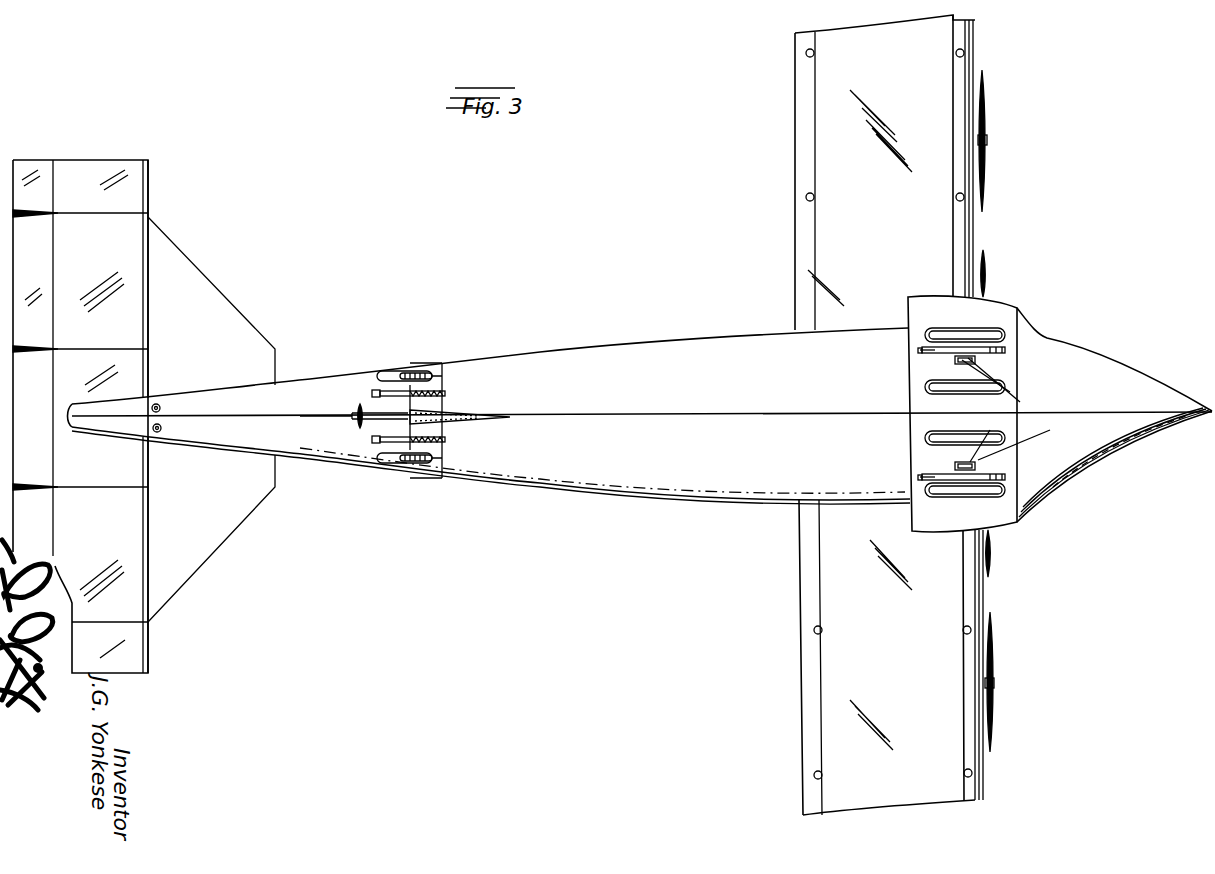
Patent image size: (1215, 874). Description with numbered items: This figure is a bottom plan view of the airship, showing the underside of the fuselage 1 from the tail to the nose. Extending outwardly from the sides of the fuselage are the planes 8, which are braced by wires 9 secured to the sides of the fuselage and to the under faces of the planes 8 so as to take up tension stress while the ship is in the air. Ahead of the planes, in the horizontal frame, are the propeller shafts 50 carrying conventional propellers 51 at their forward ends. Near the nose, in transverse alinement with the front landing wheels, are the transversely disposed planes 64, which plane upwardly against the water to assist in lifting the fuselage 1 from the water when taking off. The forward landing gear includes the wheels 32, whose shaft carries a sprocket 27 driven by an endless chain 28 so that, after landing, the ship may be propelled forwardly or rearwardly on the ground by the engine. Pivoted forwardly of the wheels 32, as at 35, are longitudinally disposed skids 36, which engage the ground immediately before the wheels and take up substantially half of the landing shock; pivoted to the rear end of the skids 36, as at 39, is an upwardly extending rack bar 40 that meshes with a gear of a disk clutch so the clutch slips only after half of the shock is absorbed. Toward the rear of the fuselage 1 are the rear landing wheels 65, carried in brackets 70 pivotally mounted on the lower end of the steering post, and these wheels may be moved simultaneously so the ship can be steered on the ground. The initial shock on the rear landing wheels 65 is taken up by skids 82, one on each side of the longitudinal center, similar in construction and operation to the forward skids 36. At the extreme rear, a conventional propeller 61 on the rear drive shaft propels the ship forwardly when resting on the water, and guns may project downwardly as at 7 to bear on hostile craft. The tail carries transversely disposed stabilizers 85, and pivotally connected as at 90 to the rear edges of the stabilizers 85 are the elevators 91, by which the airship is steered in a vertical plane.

The fuselage 1 is at (640, 416).
The down-firing gun projection 7 is at (160, 428).
The planes 8 is at (885, 415).
The wires 9 is at (818, 227).
The sprocket 27 is at (1021, 403).
The endless chain 28 is at (1012, 393).
The wheels 32 is at (925, 335).
The pivot of skids 35 is at (1005, 349).
The skids 36 is at (975, 360).
The pivot of rack bar 39 is at (955, 360).
The rack bar 40 is at (920, 351).
The propeller shafts 50 is at (984, 138).
The propellers 51 is at (987, 160).
The propeller 61 is at (352, 424).
The transversely disposed planes 64 is at (1000, 310).
The rear landing wheels 65 is at (390, 371).
The brackets 70 is at (420, 372).
The skids 82 is at (445, 392).
The stabilizers 85 is at (144, 416).
The pivotal connection of elevators 90 is at (52, 464).
The elevators 91 is at (36, 458).